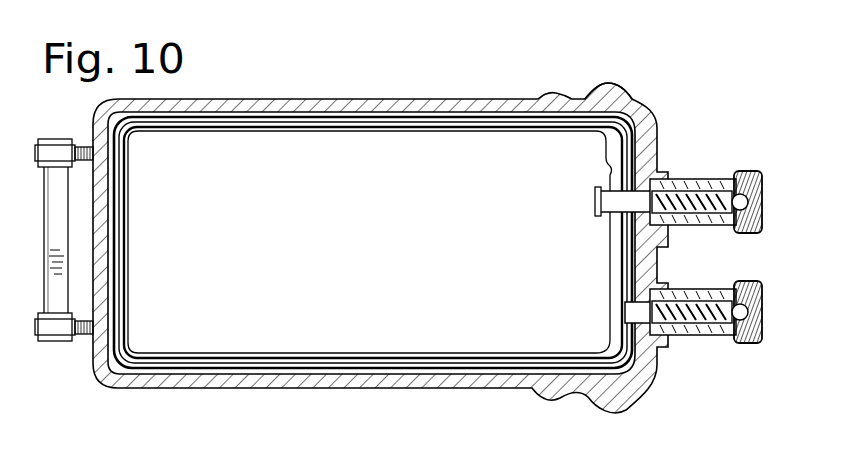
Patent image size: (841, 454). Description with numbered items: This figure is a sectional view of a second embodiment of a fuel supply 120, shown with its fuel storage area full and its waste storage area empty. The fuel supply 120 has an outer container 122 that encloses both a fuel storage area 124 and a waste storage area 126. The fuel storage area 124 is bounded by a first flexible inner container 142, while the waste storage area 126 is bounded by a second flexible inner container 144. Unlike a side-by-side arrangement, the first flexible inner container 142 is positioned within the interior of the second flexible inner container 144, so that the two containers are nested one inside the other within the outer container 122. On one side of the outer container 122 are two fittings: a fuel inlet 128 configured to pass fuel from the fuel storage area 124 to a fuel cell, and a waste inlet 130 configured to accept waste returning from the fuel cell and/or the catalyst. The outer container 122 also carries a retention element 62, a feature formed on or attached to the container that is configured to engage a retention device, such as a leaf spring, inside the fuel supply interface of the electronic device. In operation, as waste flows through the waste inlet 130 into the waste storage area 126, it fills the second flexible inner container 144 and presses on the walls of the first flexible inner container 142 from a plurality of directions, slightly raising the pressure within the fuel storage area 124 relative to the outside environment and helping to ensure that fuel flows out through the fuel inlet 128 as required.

The fuel supply 120 is at (698, 37).
The outer container 122 is at (304, 99).
The fuel storage area 124 is at (385, 251).
The waste storage area 126 is at (134, 350).
The first flexible inner container 142 is at (130, 166).
The second flexible inner container 144 is at (138, 133).
The retention element 62 is at (610, 88).
The fuel inlet 128 is at (694, 172).
The waste inlet 130 is at (694, 283).